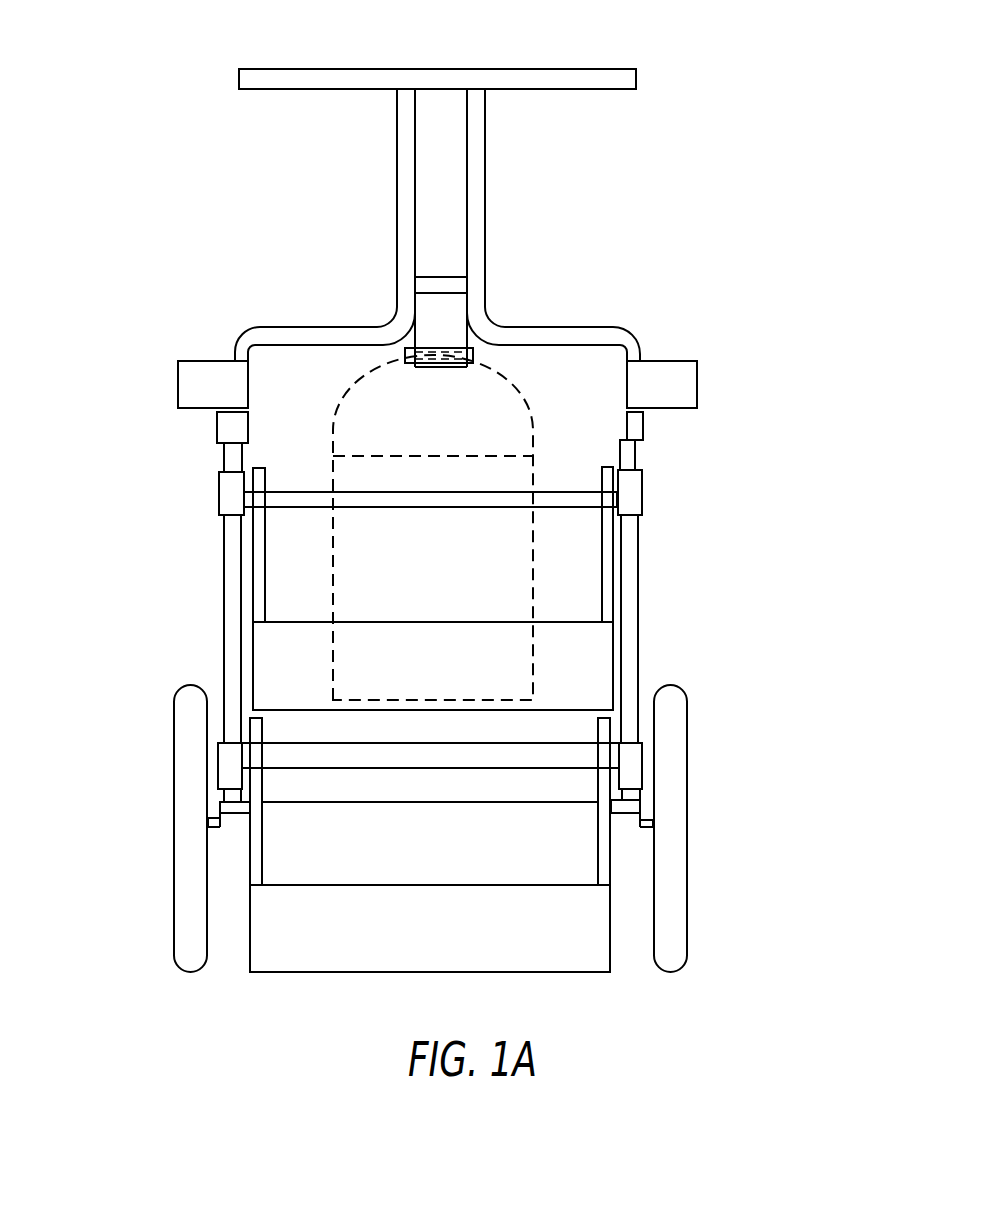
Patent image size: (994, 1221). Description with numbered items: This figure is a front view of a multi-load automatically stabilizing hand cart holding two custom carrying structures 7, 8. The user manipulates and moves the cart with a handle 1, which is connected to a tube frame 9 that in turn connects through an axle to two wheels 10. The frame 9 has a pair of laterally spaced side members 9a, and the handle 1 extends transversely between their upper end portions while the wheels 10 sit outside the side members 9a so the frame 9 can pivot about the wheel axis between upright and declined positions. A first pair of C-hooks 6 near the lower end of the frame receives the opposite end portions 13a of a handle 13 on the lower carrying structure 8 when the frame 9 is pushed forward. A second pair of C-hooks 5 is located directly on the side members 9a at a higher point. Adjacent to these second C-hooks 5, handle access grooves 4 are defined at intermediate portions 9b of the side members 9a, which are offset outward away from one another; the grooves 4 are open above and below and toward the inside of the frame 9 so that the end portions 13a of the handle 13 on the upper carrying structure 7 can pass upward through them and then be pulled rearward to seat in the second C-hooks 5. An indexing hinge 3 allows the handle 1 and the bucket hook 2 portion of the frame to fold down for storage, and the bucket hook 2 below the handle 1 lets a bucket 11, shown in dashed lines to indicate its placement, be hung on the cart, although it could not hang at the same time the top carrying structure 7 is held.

The handle 1 is at (550, 83).
The bucket hook 2 is at (442, 322).
The indexing hinge 3 is at (663, 387).
The handle access groove 4 is at (237, 427).
The second C-hook 5 is at (633, 493).
The first C-hook 6 is at (630, 777).
The carrying structure 7 is at (588, 662).
The carrying structure 8 is at (585, 933).
The tube frame 9 is at (238, 605).
The side member 9a is at (222, 640).
The intermediate portion 9b is at (217, 430).
The wheel 10 is at (200, 860).
The bucket 11 is at (533, 563).
The handle 13 is at (308, 503).
The end portion 13a is at (245, 502).